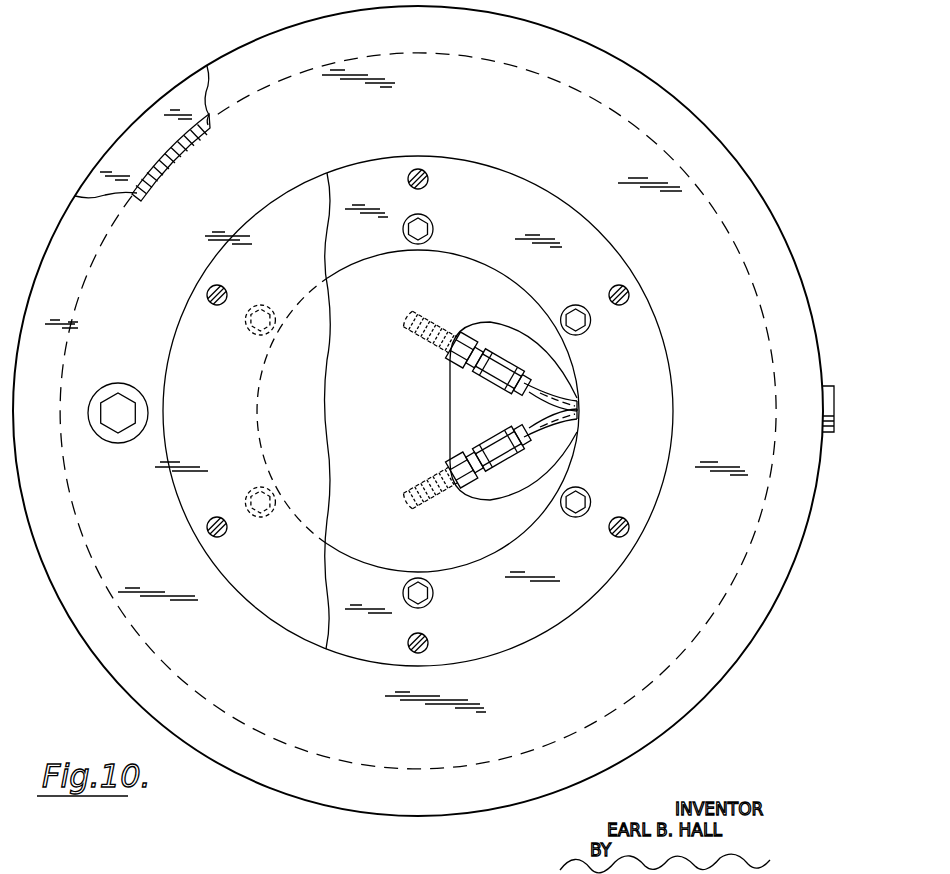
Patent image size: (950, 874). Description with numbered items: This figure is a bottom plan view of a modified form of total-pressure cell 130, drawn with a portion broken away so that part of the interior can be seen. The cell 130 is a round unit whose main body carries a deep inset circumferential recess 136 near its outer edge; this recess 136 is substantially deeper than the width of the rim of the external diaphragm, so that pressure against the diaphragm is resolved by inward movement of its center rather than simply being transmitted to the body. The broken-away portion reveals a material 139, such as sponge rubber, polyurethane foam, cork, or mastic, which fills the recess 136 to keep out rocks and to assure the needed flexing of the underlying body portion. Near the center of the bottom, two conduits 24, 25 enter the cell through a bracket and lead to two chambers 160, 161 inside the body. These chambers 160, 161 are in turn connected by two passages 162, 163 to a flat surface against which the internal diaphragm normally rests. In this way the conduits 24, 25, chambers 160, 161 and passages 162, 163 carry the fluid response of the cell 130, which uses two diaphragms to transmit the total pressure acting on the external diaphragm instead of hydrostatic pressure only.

The total-pressure cell 130 is at (687, 103).
The material 139 is at (152, 127).
The inset circumferential recess 136 is at (172, 160).
The passage 163 is at (409, 331).
The chamber 161 is at (446, 341).
The chamber 160 is at (424, 483).
The passage 162 is at (409, 496).
The conduit 25 is at (556, 394).
The conduit 24 is at (558, 430).